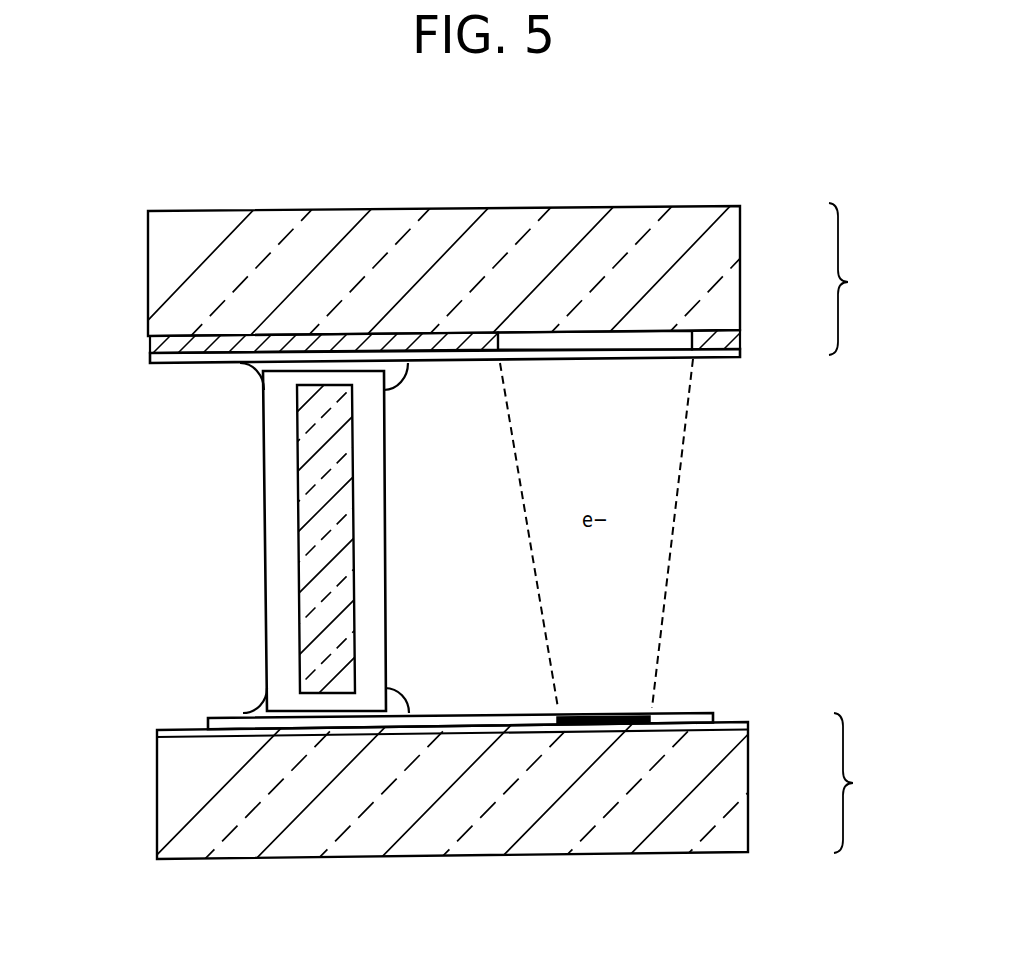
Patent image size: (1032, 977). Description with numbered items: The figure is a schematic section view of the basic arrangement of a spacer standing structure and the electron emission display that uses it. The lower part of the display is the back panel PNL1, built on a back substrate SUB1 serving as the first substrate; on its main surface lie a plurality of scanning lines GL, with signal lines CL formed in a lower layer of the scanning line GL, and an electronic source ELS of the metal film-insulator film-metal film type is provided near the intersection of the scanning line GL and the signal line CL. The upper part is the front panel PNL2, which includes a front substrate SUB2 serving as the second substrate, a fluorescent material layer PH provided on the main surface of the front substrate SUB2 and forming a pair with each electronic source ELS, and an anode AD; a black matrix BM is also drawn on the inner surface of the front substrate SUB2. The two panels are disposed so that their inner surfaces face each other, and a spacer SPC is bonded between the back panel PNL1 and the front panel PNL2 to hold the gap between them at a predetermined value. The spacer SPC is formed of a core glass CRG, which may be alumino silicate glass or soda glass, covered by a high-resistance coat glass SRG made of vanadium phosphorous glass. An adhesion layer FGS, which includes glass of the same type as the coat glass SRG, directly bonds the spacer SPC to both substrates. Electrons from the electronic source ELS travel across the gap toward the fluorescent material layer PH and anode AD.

The front substrate SUB2 is at (580, 226).
The black matrix BM is at (170, 348).
The fluorescent material layer PH is at (650, 343).
The anode AD is at (700, 354).
The spacer SPC is at (224, 534).
The coat glass SRG is at (273, 434).
The core glass CRG is at (312, 481).
The adhesion layer FGS is at (243, 377).
The scanning line GL is at (215, 719).
The electronic source ELS is at (640, 704).
The signal line CL is at (180, 737).
The back substrate SUB1 is at (558, 838).
The front panel PNL2 is at (875, 279).
The back panel PNL1 is at (879, 783).